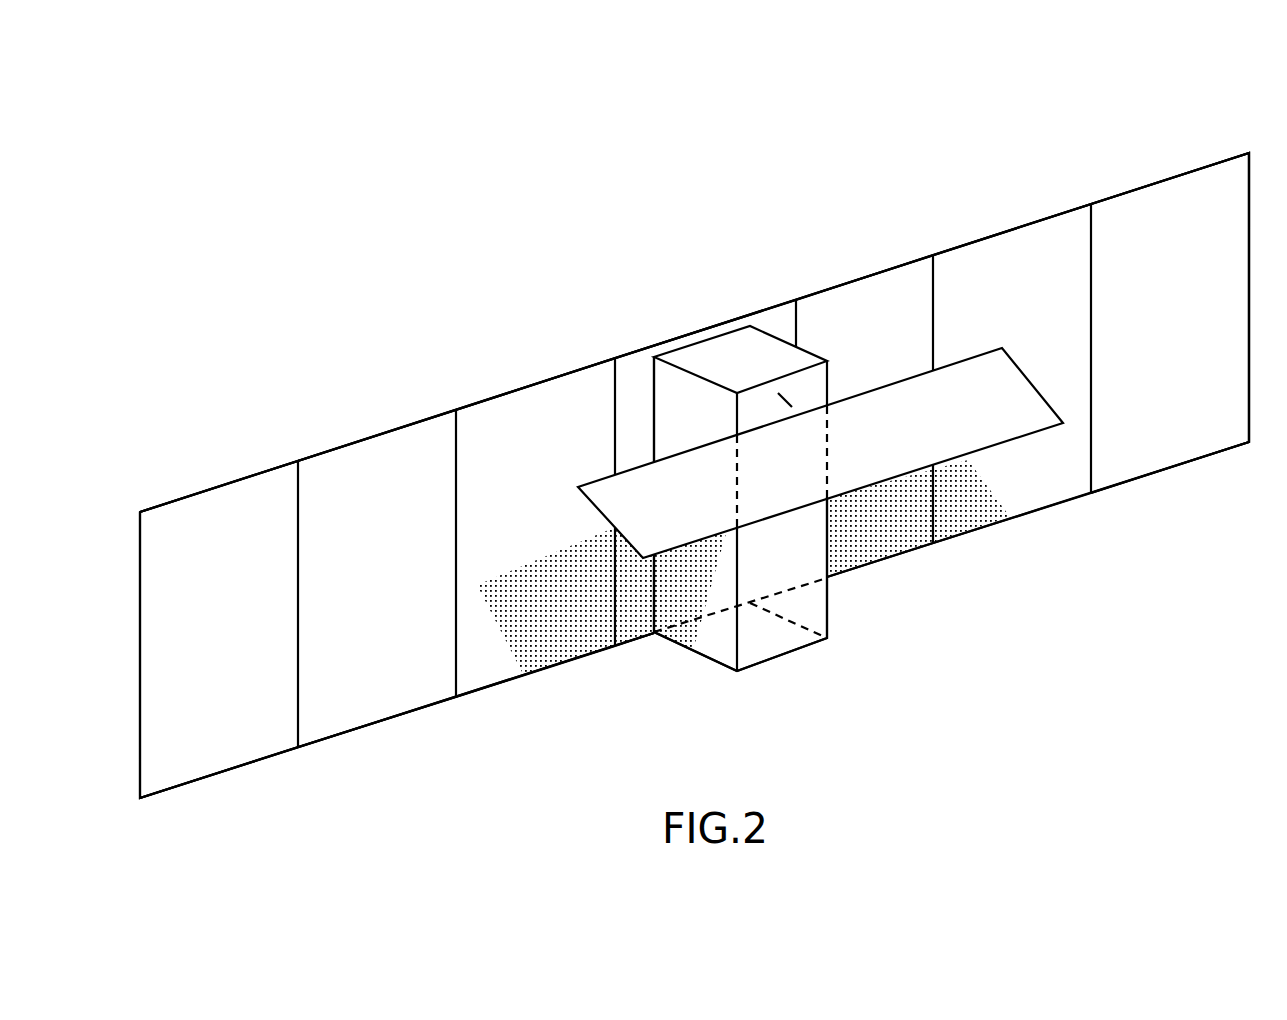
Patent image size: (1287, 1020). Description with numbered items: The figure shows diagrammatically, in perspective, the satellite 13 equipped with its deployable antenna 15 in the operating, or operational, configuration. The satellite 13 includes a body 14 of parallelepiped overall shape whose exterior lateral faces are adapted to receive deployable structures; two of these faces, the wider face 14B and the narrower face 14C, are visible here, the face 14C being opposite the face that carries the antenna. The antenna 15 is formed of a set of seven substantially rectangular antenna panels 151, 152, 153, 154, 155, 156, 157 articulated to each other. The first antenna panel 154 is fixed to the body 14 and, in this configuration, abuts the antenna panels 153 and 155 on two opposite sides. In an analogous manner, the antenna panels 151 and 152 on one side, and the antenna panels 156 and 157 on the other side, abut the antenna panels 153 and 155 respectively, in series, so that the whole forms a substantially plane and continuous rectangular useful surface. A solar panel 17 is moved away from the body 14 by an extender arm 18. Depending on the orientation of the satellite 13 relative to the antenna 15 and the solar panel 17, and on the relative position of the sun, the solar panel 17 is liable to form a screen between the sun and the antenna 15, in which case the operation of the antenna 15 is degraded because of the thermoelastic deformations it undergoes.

The satellite 13 is at (589, 207).
The body 14 is at (829, 593).
The exterior lateral face 14B is at (714, 650).
The exterior lateral face 14C is at (776, 643).
The deployable antenna 15 is at (356, 248).
The solar panel 17 is at (1018, 440).
The extender arm 18 is at (798, 413).
The antenna panel 151 is at (1164, 183).
The antenna panel 152 is at (1005, 236).
The antenna panel 153 is at (855, 283).
The first antenna panel 154 is at (700, 332).
The antenna panel 155 is at (530, 389).
The antenna panel 156 is at (372, 438).
The antenna panel 157 is at (205, 491).